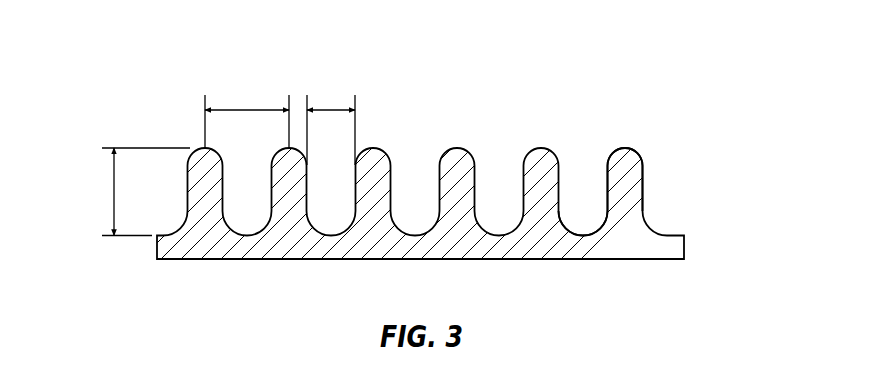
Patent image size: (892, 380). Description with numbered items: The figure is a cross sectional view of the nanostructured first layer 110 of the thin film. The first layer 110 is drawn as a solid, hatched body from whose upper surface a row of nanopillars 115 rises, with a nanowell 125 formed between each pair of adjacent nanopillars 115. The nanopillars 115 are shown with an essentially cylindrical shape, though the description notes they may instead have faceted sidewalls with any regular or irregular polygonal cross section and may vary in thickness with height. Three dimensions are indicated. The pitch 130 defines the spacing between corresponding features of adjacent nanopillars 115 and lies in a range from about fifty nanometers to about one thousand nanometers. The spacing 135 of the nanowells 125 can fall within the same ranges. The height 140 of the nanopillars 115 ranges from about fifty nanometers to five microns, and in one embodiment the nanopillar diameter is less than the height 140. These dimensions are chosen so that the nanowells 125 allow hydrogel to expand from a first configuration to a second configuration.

The nanostructured first layer 110 is at (648, 201).
The nanopillars 115 is at (625, 147).
The nanowells 125 is at (570, 188).
The pitch 130 is at (248, 110).
The spacing 135 is at (332, 110).
The height 140 is at (112, 192).